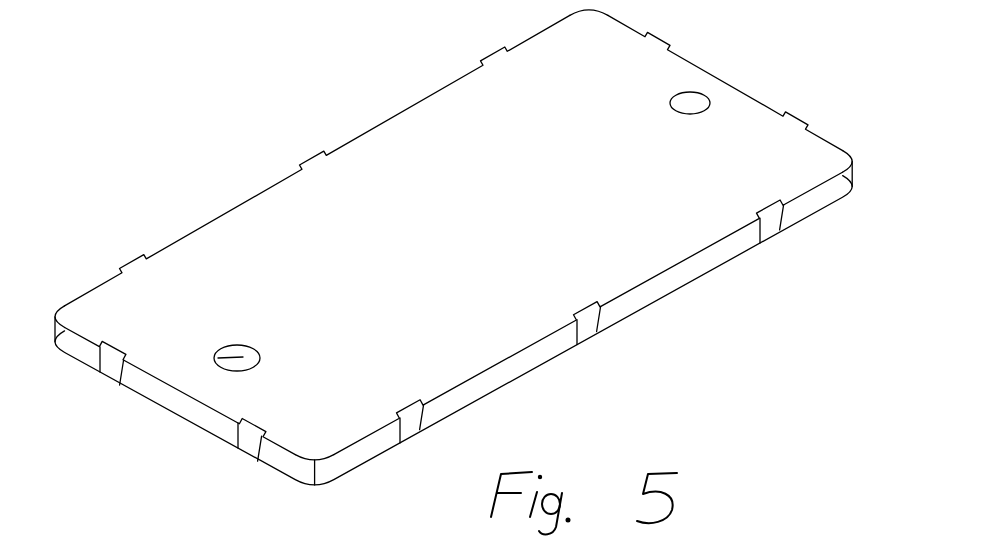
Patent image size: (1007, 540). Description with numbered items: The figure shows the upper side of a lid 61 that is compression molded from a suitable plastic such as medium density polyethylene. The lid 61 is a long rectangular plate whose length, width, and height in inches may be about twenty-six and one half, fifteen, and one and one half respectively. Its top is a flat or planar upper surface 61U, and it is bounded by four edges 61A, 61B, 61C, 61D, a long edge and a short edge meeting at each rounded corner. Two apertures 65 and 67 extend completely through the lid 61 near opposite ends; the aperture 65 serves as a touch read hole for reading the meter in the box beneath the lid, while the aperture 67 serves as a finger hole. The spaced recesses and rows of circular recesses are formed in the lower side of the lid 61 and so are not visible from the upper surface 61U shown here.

The lid 61 is at (453, 270).
The edge 61A is at (180, 426).
The edge 61B is at (588, 313).
The edge 61C is at (725, 82).
The edge 61D is at (317, 159).
The upper surface 61U is at (303, 130).
The aperture 65 is at (180, 400).
The aperture 67 is at (692, 97).